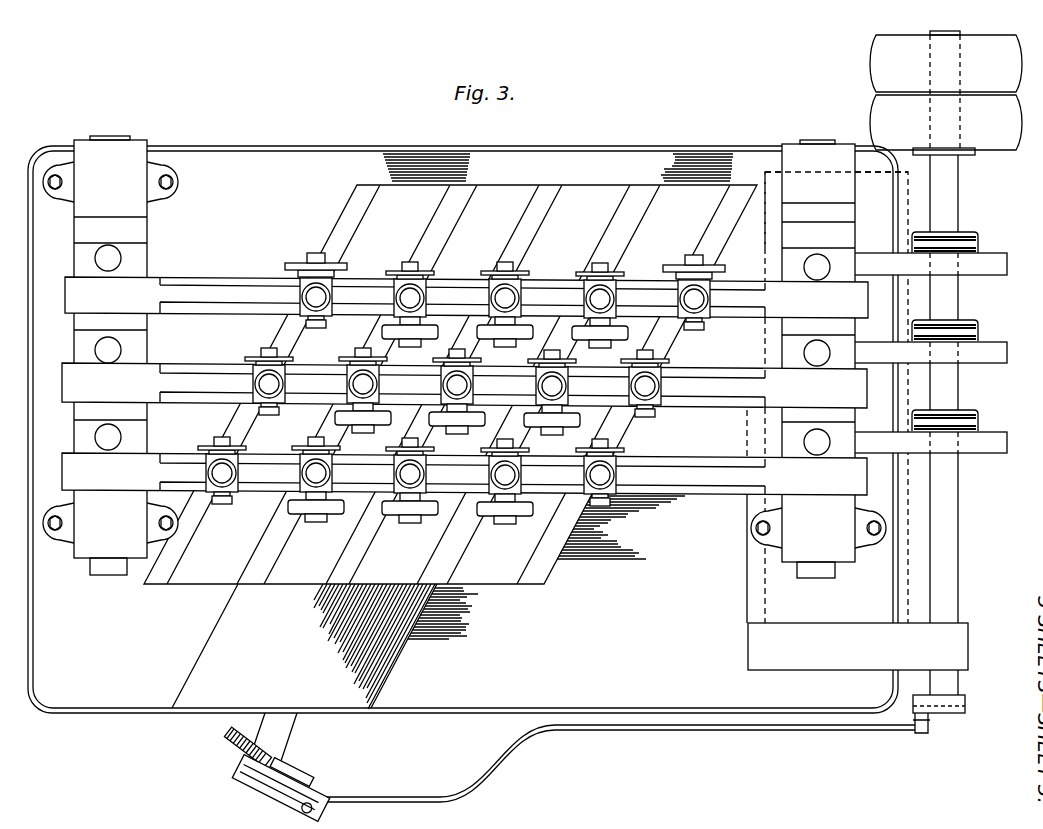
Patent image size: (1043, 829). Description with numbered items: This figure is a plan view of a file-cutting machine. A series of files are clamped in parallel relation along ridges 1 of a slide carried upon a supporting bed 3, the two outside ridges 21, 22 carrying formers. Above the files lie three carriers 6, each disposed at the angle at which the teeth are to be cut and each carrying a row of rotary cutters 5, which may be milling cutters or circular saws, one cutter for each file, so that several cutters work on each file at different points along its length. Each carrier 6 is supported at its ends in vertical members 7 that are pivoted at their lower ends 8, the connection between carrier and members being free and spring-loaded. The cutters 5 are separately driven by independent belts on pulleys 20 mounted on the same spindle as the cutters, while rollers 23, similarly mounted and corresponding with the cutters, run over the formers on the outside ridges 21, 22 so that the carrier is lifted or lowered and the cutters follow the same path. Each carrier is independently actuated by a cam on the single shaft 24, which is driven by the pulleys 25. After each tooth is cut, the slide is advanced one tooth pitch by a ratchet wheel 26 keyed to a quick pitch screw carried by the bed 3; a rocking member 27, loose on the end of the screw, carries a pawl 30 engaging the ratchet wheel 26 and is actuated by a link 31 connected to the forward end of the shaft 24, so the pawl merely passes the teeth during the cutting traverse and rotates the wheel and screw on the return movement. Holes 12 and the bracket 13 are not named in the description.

The ridges 1 is at (438, 222).
The supporting bed 3 is at (598, 162).
The rotary cutters 5 is at (497, 270).
The carrier 6 is at (205, 300).
The vertical members 7 is at (80, 290).
The lower ends 8 is at (822, 575).
The holes 12 is at (108, 432).
The bracket 13 is at (868, 350).
The pulleys 20 is at (630, 438).
The outside ridge 21 is at (348, 236).
The outside ridge 22 is at (712, 246).
The rollers 23 is at (250, 356).
The shaft 24 is at (960, 300).
The pulleys 25 is at (885, 115).
The ratchet wheel 26 is at (230, 740).
The rocking member 27 is at (262, 778).
The pawl 30 is at (300, 768).
The link 31 is at (508, 755).